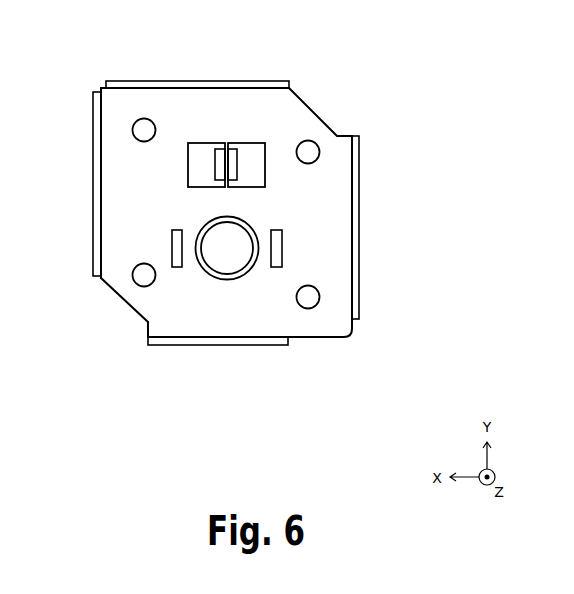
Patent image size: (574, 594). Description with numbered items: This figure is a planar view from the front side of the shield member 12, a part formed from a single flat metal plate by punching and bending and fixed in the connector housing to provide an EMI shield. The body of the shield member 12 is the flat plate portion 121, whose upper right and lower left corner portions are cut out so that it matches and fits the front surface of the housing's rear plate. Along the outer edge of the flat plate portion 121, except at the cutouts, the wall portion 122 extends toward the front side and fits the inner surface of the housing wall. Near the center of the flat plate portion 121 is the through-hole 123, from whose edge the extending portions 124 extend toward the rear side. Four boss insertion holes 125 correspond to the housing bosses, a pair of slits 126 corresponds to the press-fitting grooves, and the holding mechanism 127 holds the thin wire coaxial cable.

The shield member 12 is at (401, 64).
The flat plate portion 121 is at (334, 164).
The wall portion 122 is at (219, 85).
The through-hole 123 is at (248, 270).
The extending portions 124 is at (210, 273).
The boss insertion holes 125 is at (144, 118).
The slits 126 is at (171, 245).
The holding mechanism 127 is at (232, 135).